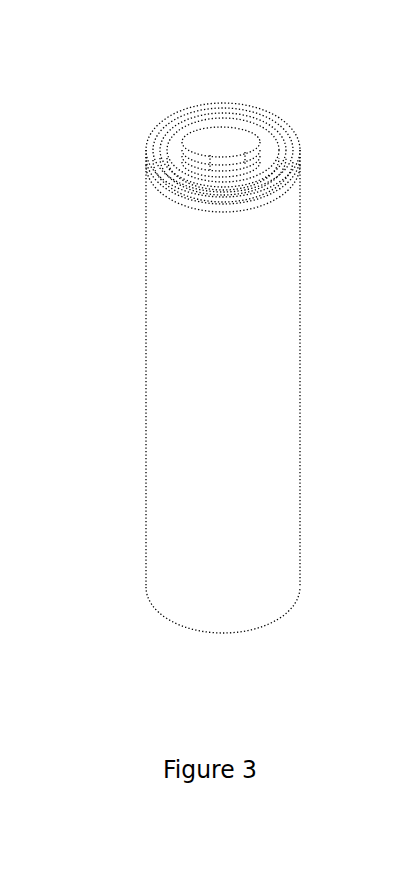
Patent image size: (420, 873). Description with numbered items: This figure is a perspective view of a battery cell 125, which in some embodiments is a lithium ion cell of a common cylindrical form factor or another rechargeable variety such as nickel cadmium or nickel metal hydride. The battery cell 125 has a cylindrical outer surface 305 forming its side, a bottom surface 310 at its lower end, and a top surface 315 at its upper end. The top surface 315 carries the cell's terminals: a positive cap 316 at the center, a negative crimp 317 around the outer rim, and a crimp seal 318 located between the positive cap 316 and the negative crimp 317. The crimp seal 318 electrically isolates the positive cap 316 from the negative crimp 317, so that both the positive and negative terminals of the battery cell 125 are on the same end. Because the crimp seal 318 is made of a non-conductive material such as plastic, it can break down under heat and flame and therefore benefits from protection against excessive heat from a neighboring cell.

The battery cell 125 is at (77, 530).
The cylindrical outer surface 305 is at (158, 335).
The bottom surface 310 is at (288, 640).
The top surface 315 is at (152, 111).
The positive cap 316 is at (224, 128).
The negative crimp 317 is at (303, 159).
The crimp seal 318 is at (279, 131).